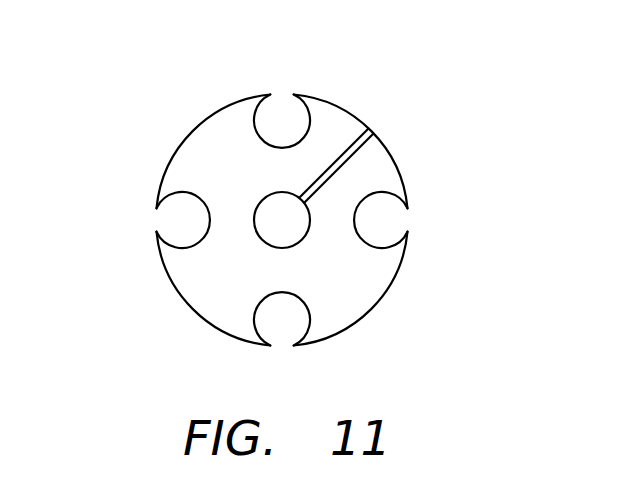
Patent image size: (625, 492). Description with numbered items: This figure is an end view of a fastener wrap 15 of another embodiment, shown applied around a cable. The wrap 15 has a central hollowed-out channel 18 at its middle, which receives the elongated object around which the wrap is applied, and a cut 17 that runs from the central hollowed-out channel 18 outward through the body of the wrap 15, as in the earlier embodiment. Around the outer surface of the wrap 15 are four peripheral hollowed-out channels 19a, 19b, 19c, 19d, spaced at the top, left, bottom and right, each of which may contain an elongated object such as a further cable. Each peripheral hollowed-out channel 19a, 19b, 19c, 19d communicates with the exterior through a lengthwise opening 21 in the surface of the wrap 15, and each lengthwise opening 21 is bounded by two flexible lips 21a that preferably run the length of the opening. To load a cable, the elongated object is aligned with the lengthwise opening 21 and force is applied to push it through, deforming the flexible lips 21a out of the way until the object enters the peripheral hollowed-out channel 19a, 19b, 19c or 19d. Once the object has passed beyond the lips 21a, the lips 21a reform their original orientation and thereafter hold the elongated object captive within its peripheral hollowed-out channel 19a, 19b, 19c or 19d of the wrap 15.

The fastener wrap 15 is at (178, 143).
The cut 17 is at (357, 141).
The central hollowed-out channel 18 is at (290, 223).
The peripheral hollowed-out channel 19a is at (267, 128).
The peripheral hollowed-out channel 19b is at (183, 235).
The peripheral hollowed-out channel 19c is at (270, 328).
The peripheral hollowed-out channel 19d is at (384, 236).
The lengthwise opening 21 is at (280, 80).
The flexible lips 21a is at (153, 210).